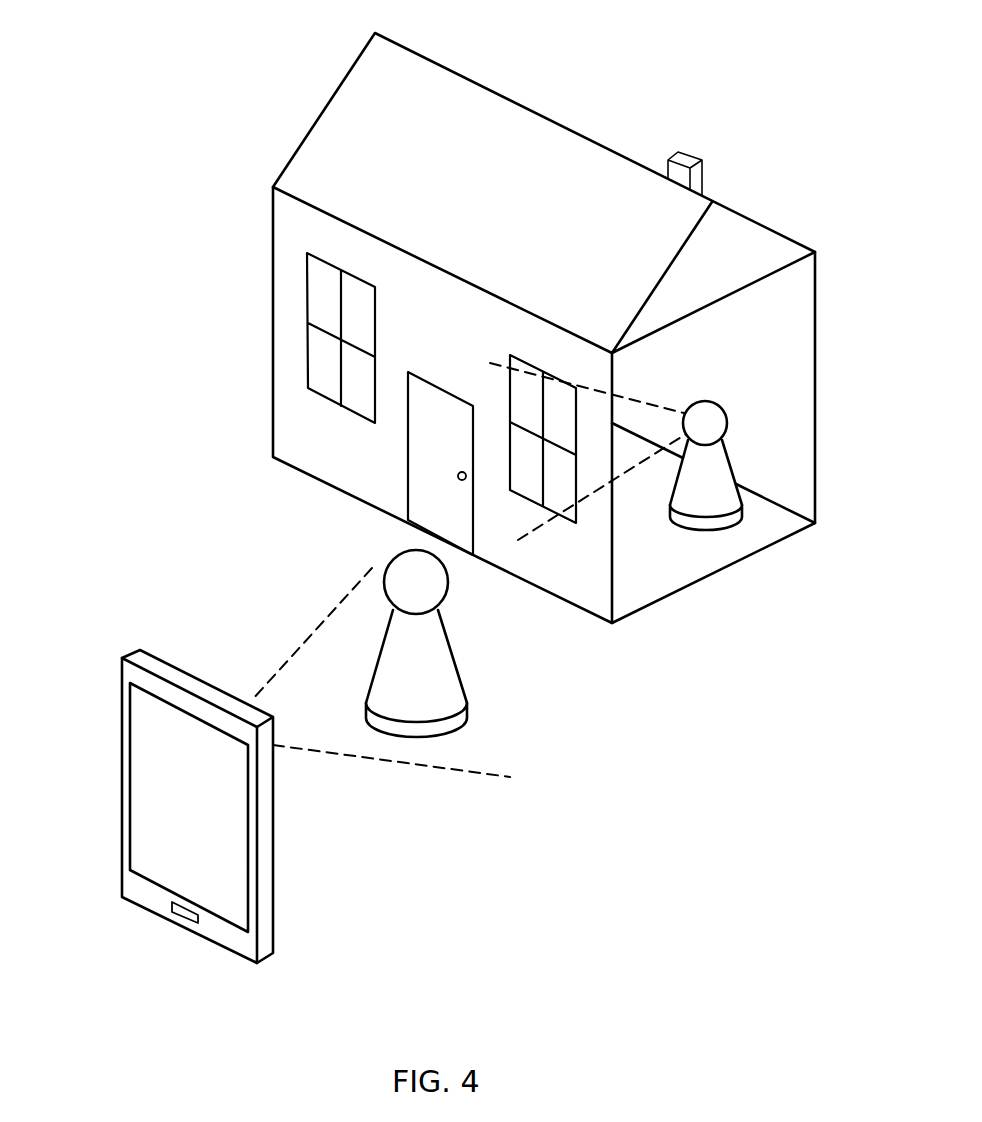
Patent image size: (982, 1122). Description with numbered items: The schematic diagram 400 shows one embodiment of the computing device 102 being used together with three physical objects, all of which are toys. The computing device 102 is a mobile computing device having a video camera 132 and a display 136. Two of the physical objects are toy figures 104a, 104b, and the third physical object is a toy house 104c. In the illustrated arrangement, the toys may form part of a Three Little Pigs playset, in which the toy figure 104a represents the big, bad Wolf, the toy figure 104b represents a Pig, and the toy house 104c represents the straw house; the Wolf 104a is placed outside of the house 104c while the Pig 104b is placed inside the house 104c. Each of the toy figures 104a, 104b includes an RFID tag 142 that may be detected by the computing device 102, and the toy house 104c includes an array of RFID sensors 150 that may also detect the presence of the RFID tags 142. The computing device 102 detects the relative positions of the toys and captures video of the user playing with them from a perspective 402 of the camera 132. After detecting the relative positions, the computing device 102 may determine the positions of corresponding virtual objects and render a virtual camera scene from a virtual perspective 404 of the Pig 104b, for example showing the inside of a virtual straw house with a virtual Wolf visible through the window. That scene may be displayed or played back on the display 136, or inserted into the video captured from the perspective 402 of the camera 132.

The schematic diagram 400 is at (836, 95).
The toy house 104c is at (308, 136).
The array of RFID sensors 150 is at (653, 582).
The virtual perspective 404 is at (660, 410).
The toy figure 104b is at (730, 465).
The toy figure 104a is at (460, 670).
The RFID tag 142 is at (720, 527).
The video camera 132 is at (274, 702).
The perspective 402 is at (320, 750).
The computing device 102 is at (122, 693).
The display 136 is at (145, 733).